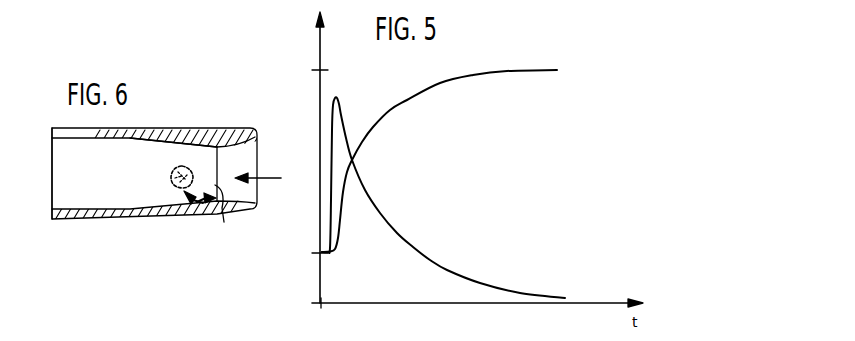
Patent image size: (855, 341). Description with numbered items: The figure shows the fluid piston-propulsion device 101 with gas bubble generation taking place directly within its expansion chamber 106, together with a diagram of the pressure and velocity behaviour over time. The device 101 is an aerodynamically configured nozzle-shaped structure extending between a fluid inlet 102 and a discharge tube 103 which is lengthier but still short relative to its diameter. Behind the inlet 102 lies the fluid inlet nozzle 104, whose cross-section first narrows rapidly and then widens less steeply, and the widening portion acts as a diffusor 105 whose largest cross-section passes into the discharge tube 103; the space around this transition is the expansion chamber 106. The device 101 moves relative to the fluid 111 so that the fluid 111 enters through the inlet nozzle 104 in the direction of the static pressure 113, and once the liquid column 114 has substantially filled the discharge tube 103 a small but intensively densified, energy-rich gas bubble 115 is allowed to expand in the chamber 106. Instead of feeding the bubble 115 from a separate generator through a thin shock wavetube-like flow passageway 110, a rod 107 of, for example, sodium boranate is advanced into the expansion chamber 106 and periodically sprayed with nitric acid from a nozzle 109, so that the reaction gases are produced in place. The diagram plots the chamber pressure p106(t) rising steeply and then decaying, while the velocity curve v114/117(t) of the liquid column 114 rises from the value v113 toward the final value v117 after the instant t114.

In FIG. 6, the fluid piston-propulsion device 101 is at (205, 113).
In FIG. 6, the fluid inlet 102 is at (250, 163).
In FIG. 6, the discharge tube 103 is at (62, 185).
In FIG. 6, the fluid inlet nozzle 104 is at (225, 210).
In FIG. 6, the diffusor 105 is at (157, 148).
In FIG. 6, the expansion chamber 106 is at (148, 183).
In FIG. 5, the expansion chamber 106 is at (342, 116).
In FIG. 6, the rod 107 is at (190, 203).
In FIG. 6, the nozzle 109 is at (209, 206).
In FIG. 6, the flow passageway 110 is at (176, 6).
In FIG. 6, the fluid 111 is at (274, 196).
In FIG. 6, the static pressure 113 is at (281, 178).
In FIG. 5, the static pressure 113 is at (306, 255).
In FIG. 5, the liquid column 114 is at (458, 82).
In FIG. 6, the compressed gas bubble 115 is at (182, 165).
In FIG. 5, the final velocity 117 is at (307, 72).